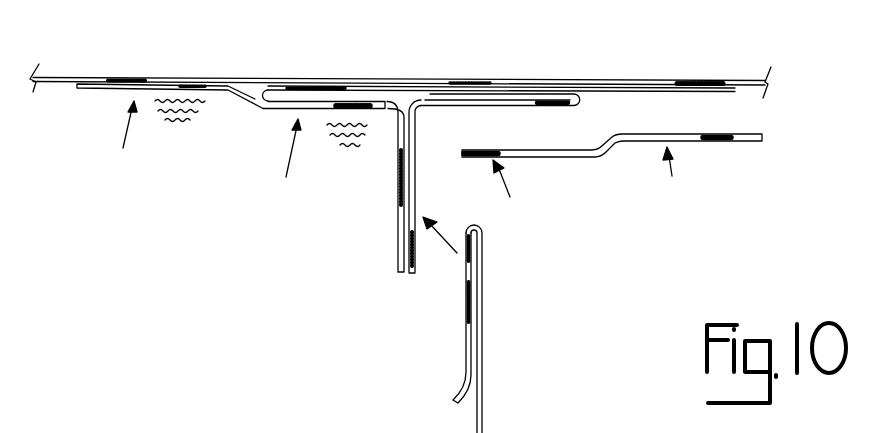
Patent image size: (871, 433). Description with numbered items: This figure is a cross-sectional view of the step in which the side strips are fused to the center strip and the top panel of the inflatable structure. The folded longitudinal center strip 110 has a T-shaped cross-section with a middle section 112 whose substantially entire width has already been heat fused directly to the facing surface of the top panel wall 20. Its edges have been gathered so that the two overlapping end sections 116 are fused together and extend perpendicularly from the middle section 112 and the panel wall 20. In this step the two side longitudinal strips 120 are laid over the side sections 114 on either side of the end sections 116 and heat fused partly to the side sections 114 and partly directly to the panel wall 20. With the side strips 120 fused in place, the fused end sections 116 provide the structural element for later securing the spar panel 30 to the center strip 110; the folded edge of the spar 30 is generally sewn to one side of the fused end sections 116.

The top panel wall 20 is at (130, 72).
The spar panel 30 is at (482, 415).
The folded longitudinal center strip 110 is at (470, 74).
The middle section 112 is at (352, 88).
The side section 114 is at (306, 102).
The overlapping end section 116 is at (413, 180).
The side longitudinal strip 120 is at (218, 100).